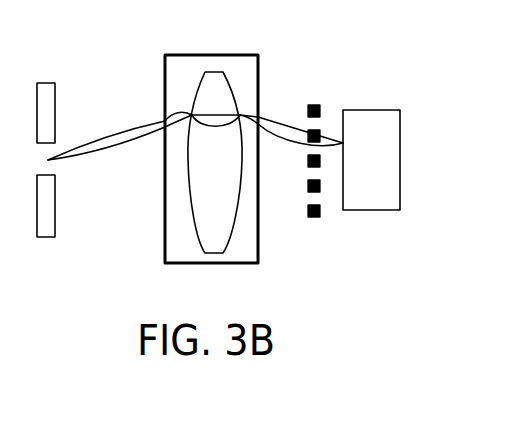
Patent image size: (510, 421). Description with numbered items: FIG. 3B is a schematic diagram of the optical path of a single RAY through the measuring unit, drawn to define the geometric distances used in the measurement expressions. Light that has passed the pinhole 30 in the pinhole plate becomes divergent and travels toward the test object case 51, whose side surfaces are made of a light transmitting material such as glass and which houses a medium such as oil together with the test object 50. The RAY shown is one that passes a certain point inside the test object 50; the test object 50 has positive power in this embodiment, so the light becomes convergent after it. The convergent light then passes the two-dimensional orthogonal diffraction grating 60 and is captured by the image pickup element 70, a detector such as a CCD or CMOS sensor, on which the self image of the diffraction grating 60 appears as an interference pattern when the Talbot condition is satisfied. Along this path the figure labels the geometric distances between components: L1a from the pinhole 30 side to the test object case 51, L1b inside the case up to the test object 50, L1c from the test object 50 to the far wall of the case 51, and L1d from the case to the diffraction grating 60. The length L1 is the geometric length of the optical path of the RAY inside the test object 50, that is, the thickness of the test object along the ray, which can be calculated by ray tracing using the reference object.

The pinhole 30 is at (36, 103).
The test object 50 is at (223, 135).
The test object case 51 is at (164, 54).
The two-dimensional orthogonal diffraction grating 60 is at (322, 108).
The image pickup element 70 is at (372, 110).
The geometric length of optical path in test object L1 is at (213, 127).
The geometric distance along ray L1a is at (114, 152).
The geometric distance along ray L1b is at (183, 110).
The geometric distance along ray L1c is at (250, 108).
The geometric distance along ray L1d is at (300, 148).
The ray RAY is at (83, 143).